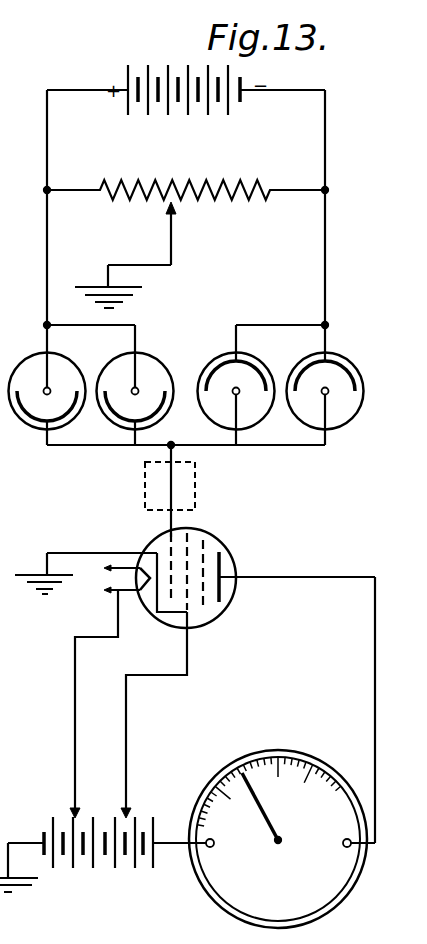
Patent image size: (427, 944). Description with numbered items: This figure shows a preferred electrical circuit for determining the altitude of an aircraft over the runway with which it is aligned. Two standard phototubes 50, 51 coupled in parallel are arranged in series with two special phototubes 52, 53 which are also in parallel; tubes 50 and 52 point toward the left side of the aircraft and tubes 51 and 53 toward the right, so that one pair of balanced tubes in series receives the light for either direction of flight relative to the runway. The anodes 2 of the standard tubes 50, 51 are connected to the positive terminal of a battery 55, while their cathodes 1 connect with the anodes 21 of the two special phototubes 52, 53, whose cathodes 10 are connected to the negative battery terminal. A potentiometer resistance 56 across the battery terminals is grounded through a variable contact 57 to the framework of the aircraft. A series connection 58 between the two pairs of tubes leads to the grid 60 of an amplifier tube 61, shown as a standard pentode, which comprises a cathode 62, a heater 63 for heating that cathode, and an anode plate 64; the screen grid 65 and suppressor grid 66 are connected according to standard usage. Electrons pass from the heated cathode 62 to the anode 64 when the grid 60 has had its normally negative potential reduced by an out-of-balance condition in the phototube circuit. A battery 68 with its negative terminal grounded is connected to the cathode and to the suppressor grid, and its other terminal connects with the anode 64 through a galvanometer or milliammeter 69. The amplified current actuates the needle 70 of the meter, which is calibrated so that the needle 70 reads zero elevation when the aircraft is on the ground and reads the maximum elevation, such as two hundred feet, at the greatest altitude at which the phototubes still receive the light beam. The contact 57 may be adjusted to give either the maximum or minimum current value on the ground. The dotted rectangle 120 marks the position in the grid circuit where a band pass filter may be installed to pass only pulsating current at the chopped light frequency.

The cathode 1 is at (110, 417).
The anode 2 is at (44, 388).
The cathode 10 is at (304, 370).
The anode 21 is at (239, 394).
The standard phototube 50 is at (22, 363).
The standard phototube 51 is at (110, 363).
The special phototube 52 is at (211, 365).
The special phototube 53 is at (299, 364).
The battery 55 is at (189, 116).
The potentiometer resistance 56 is at (196, 186).
The variable contact 57 is at (173, 223).
The series connection 58 is at (223, 446).
The grid 60 is at (168, 546).
The amplifier tube 61 is at (206, 540).
The cathode 62 is at (152, 598).
The heater 63 is at (138, 578).
The anode plate 64 is at (222, 567).
The screen grid 65 is at (207, 598).
The suppressor grid 66 is at (192, 619).
The battery 68 is at (115, 858).
The milliammeter 69 is at (278, 839).
The needle 70 is at (262, 821).
The dotted rectangle 120 is at (145, 492).